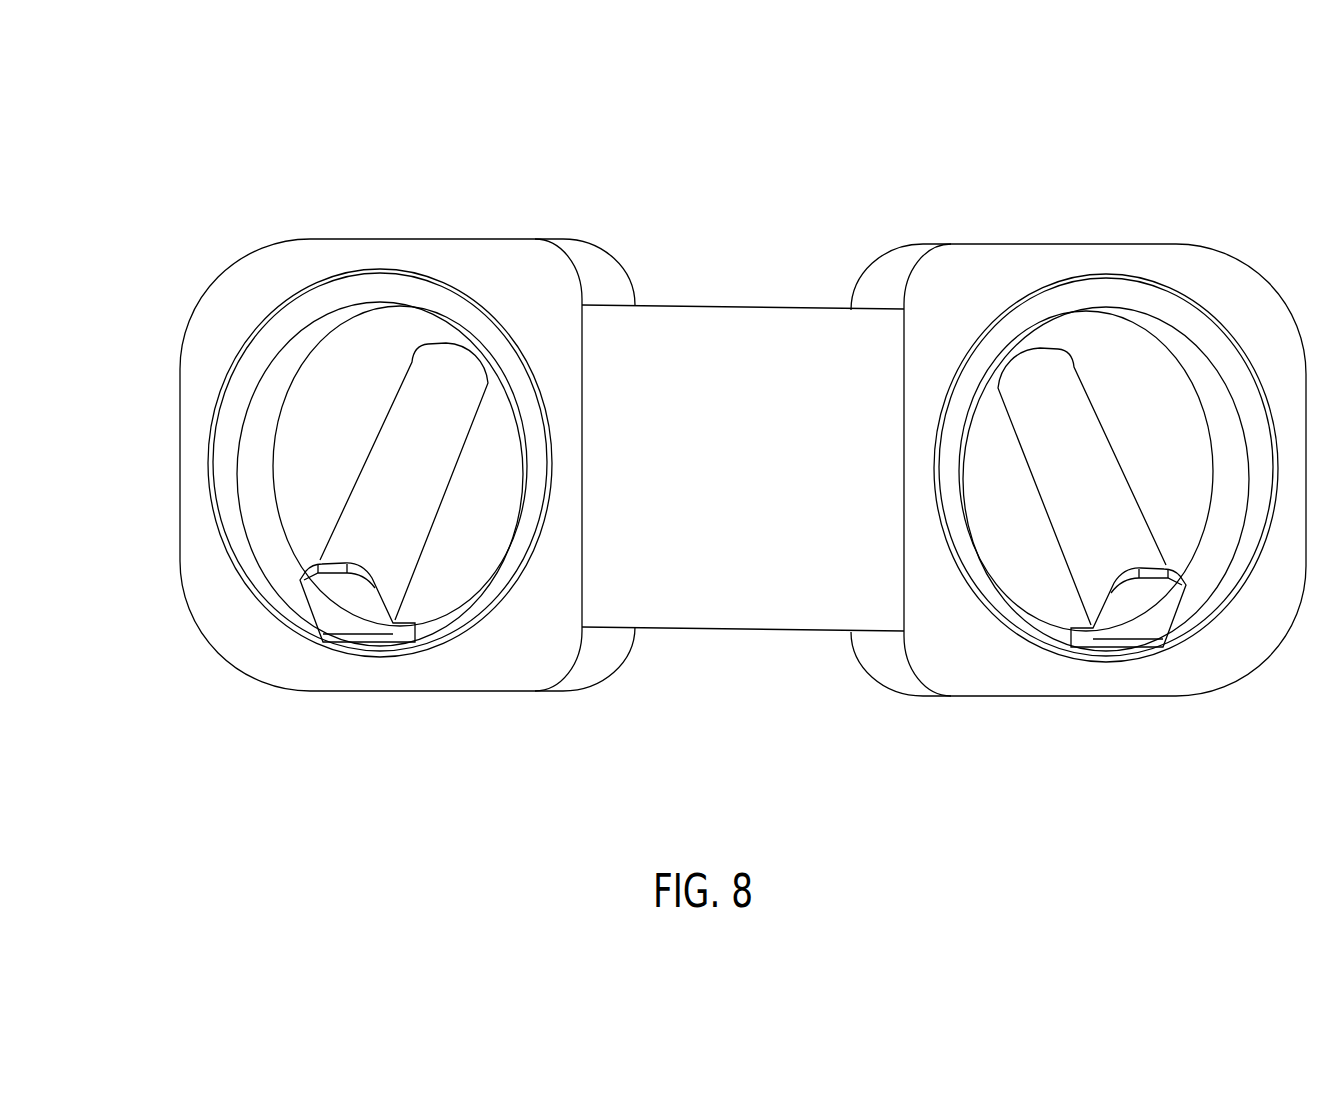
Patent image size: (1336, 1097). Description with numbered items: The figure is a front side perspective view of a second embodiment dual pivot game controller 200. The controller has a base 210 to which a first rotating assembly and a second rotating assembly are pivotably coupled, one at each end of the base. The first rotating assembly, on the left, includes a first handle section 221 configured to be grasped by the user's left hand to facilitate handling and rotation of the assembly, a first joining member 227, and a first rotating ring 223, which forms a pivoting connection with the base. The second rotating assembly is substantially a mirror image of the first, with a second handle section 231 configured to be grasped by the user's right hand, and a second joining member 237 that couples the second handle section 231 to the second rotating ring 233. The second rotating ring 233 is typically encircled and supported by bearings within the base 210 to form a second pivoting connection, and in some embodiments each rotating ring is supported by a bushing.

The dual pivot game controller 200 is at (765, 140).
The base 210 is at (510, 239).
The first handle section 221 is at (365, 460).
The first rotating ring 223 is at (330, 307).
The first joining member 227 is at (312, 618).
The second handle section 231 is at (1097, 412).
The second rotating ring 233 is at (1185, 335).
The second joining member 237 is at (1168, 638).